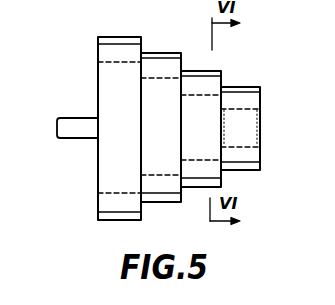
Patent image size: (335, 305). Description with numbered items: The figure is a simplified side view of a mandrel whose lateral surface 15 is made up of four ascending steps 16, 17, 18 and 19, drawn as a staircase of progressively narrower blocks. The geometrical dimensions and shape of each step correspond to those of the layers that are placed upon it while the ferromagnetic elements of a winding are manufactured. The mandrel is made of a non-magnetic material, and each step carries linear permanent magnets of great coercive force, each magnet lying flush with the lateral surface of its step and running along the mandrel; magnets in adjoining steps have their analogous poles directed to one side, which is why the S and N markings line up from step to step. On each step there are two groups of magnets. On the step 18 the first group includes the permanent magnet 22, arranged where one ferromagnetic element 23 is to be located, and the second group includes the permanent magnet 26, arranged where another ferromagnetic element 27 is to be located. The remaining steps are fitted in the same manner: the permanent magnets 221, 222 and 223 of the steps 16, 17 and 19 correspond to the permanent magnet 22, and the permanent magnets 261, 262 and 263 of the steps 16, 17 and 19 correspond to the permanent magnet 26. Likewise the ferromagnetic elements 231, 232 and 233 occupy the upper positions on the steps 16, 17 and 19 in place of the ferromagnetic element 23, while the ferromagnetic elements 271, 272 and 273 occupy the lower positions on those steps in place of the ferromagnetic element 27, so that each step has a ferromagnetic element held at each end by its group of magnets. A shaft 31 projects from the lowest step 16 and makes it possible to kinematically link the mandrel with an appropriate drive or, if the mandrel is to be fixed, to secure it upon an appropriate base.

The lateral surface 15 is at (182, 39).
The first step 16 is at (119, 128).
The second step 17 is at (161, 127).
The third step 18 is at (201, 129).
The fourth step 19 is at (240, 128).
The permanent magnet 22 is at (201, 88).
The permanent magnet 221 is at (108, 64).
The permanent magnet 222 is at (160, 74).
The permanent magnet 223 is at (258, 109).
The ferromagnetic element 23 is at (195, 70).
The ferromagnetic element 231 is at (105, 37).
The ferromagnetic element 232 is at (159, 53).
The ferromagnetic element 233 is at (242, 88).
The permanent magnet 26 is at (198, 161).
The permanent magnet 261 is at (117, 194).
The permanent magnet 262 is at (157, 176).
The permanent magnet 263 is at (248, 148).
The ferromagnetic element 27 is at (195, 188).
The ferromagnetic element 271 is at (110, 219).
The ferromagnetic element 272 is at (162, 203).
The ferromagnetic element 273 is at (255, 171).
The shaft 31 is at (68, 140).